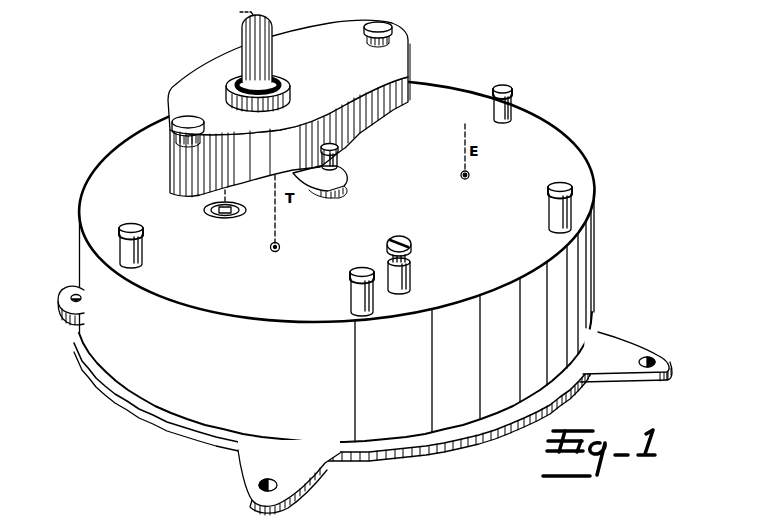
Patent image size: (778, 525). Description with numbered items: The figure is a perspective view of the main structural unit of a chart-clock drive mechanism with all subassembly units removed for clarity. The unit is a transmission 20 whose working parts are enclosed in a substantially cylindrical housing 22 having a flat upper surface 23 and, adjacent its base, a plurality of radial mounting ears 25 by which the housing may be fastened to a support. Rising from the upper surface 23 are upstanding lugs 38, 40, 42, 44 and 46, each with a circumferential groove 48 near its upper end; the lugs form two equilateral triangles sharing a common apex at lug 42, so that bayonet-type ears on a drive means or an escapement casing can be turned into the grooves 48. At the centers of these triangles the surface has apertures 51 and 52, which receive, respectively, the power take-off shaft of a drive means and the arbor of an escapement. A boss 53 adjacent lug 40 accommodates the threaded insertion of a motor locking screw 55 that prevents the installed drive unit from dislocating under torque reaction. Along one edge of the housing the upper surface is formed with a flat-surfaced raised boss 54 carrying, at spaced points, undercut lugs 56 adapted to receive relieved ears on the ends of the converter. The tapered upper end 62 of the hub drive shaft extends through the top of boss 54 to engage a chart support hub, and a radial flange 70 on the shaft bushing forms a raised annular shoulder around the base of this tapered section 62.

The transmission 20 is at (357, 291).
The housing 22 is at (580, 151).
The flat upper surface 23 is at (540, 242).
The radial mounting ears 25 is at (60, 313).
The upstanding lug 38 is at (143, 236).
The upstanding lug 40 is at (350, 302).
The upstanding lug 42 is at (341, 152).
The upstanding lug 44 is at (574, 196).
The upstanding lug 46 is at (512, 93).
The circumferential groove 48 is at (498, 88).
The aperture 51 is at (280, 247).
The aperture 52 is at (467, 179).
The boss 53 is at (411, 278).
The boss 54 is at (410, 63).
The motor locking screw 55 is at (409, 244).
The undercut lugs 56 is at (180, 118).
The upper end of hub drive shaft 62 is at (272, 38).
The radial flange 70 is at (286, 92).